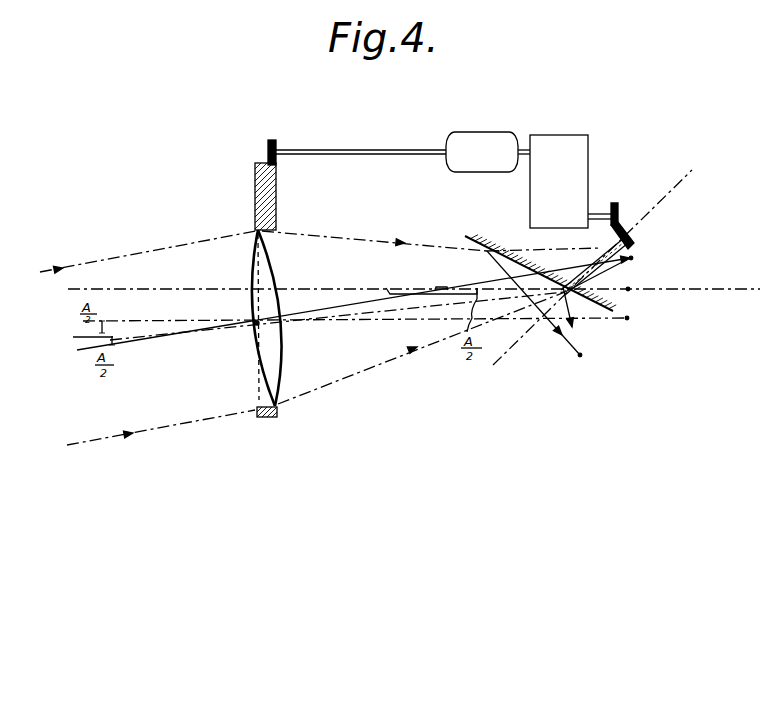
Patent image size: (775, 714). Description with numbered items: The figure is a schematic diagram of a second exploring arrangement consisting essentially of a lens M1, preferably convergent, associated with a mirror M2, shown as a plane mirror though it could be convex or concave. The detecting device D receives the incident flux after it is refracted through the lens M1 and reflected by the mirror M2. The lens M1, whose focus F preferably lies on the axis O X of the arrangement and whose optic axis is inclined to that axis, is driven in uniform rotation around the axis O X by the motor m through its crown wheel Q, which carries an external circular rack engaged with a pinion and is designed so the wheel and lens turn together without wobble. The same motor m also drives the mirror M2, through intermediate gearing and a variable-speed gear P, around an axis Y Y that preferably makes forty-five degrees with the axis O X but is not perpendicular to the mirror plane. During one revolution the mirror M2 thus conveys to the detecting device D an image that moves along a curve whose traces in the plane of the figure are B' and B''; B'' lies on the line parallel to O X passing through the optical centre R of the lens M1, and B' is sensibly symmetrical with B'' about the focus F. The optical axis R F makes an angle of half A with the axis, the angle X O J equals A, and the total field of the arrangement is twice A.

The axis OX X is at (414, 279).
The axis Y— Y is at (600, 279).
The crown wheel Q is at (276, 200).
The motor m is at (478, 139).
The variable-speed gear P is at (578, 160).
The focus F is at (603, 266).
The mirror M2 is at (474, 240).
The lens M1 is at (280, 382).
The optical centre R is at (254, 326).
The detecting device D is at (543, 309).
The direction J is at (344, 315).
The image trace B' is at (609, 270).
The image trace B'' is at (370, 307).
The angle A is at (424, 299).
The point O is at (441, 278).